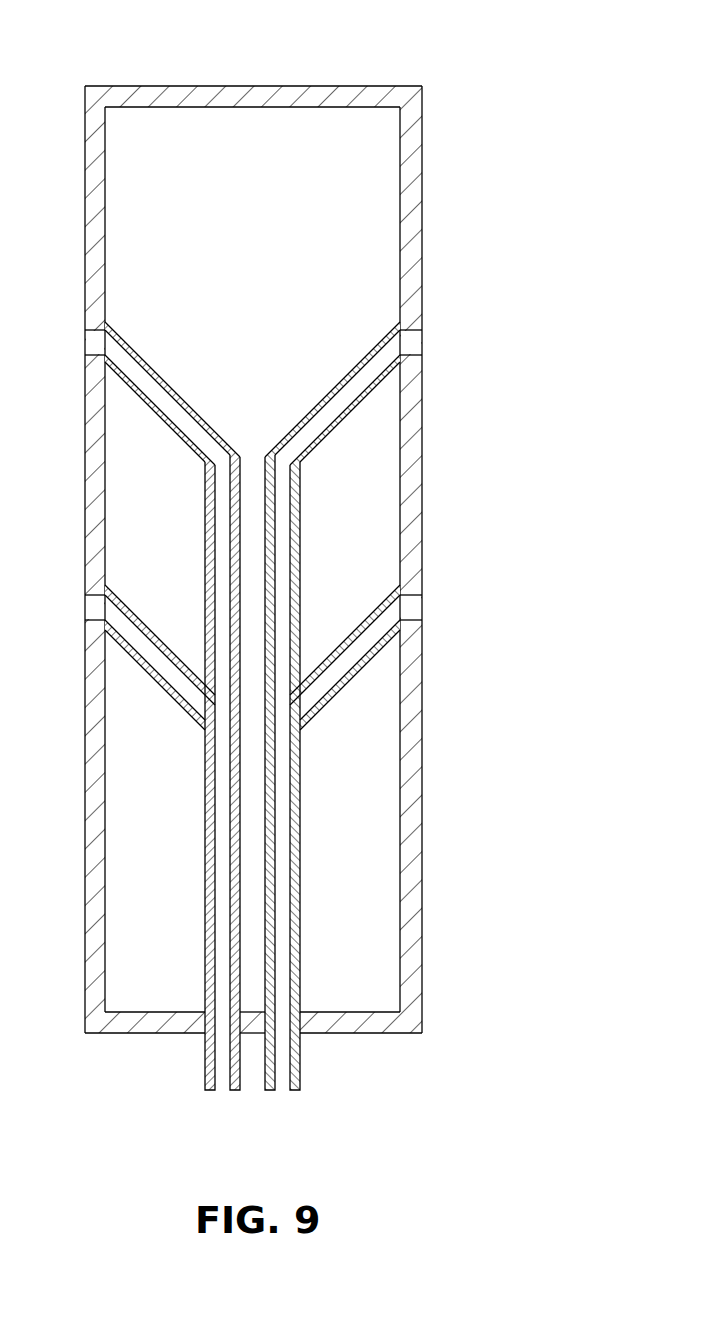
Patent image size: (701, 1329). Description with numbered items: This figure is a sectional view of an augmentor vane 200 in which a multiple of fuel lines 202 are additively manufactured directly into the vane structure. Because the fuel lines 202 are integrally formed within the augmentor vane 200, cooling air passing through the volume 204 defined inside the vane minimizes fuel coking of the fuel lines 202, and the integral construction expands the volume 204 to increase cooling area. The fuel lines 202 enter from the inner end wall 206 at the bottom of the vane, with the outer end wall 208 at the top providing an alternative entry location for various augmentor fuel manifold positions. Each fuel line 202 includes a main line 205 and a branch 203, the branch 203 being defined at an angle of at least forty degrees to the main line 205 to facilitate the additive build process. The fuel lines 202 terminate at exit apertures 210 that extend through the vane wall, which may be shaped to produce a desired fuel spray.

The augmentor vane 200 is at (343, 565).
The fuel lines 202 is at (281, 1093).
The branch 203 is at (355, 357).
The volume 204 is at (246, 273).
The main line 205 is at (300, 573).
The inner end wall 206 is at (358, 1022).
The outer end wall 208 is at (247, 86).
The exit apertures 210 is at (94, 326).